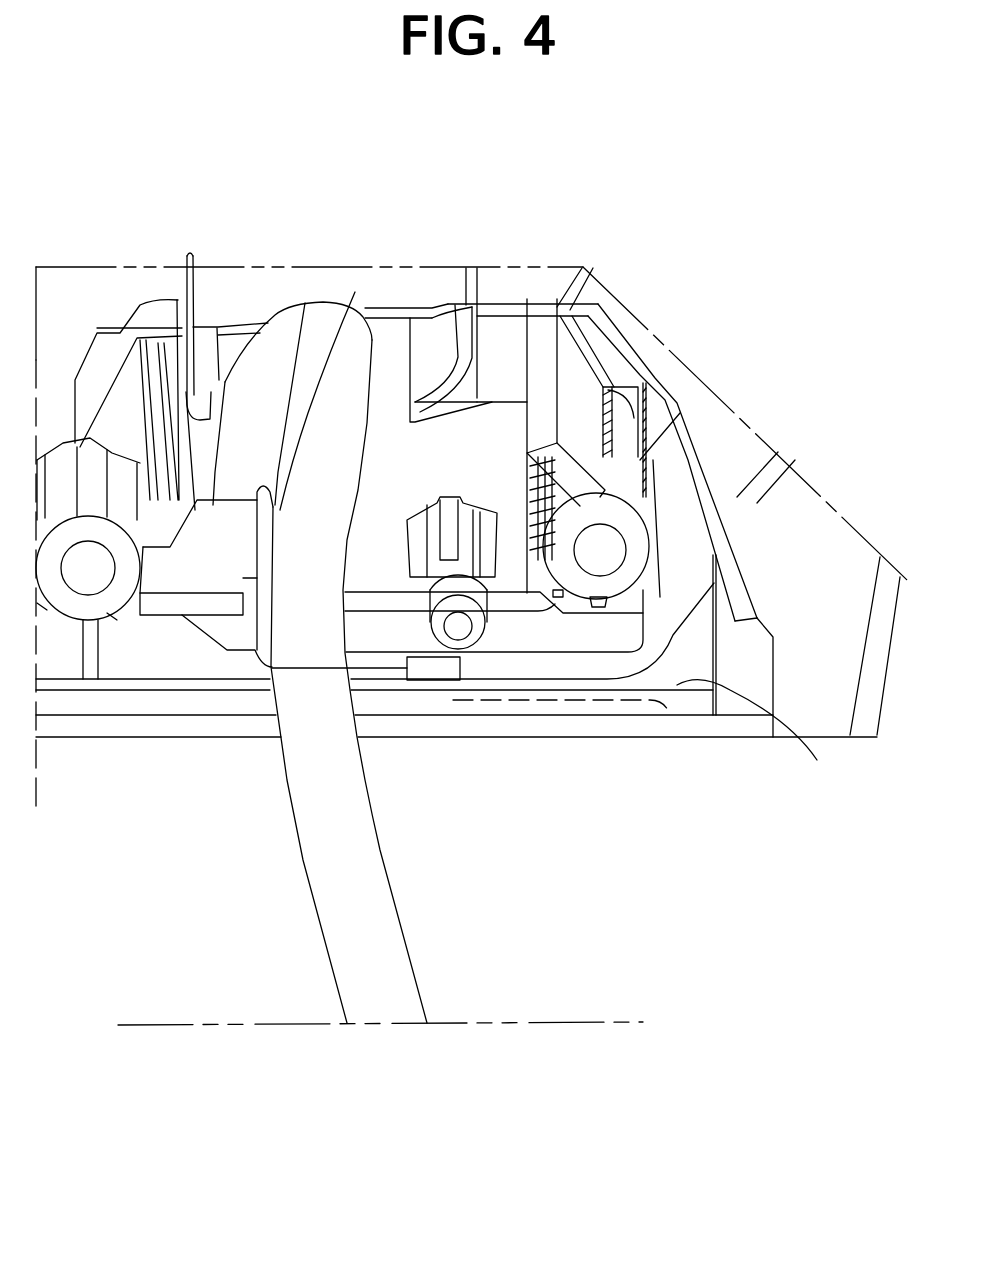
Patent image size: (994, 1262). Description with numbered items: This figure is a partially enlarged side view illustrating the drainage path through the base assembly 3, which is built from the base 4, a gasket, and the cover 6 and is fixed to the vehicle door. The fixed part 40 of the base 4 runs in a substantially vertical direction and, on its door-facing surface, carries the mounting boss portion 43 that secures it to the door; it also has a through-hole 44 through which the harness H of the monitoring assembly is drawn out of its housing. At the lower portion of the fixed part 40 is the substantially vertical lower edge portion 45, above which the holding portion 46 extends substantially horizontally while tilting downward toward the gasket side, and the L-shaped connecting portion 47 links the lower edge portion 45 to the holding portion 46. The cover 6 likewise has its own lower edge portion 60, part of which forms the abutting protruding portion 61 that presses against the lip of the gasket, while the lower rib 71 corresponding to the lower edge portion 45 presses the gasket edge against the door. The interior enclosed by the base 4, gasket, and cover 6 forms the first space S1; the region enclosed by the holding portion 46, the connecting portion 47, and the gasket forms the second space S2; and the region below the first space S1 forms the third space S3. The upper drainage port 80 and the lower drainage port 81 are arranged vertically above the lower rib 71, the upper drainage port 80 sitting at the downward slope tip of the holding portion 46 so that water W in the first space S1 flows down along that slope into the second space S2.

The base assembly 3 is at (200, 233).
The base 4 is at (260, 263).
The through-hole 44 is at (247, 500).
The water W is at (357, 310).
The holding portion 46 is at (478, 467).
The connecting portion 47 is at (597, 630).
The upper drainage port 80 is at (253, 580).
The lower drainage port 81 is at (457, 657).
The mounting boss portion 43 is at (67, 620).
The fixed part 40 is at (857, 643).
The lower edge portion 45 is at (763, 756).
The lower edge portion 60 is at (750, 737).
The abutting protruding portion 61 is at (678, 737).
The lower rib 71 is at (493, 690).
The cover 6 is at (192, 742).
The first space S1 is at (210, 558).
The second space S2 is at (238, 667).
The third space S3 is at (543, 710).
The harness H is at (377, 1024).